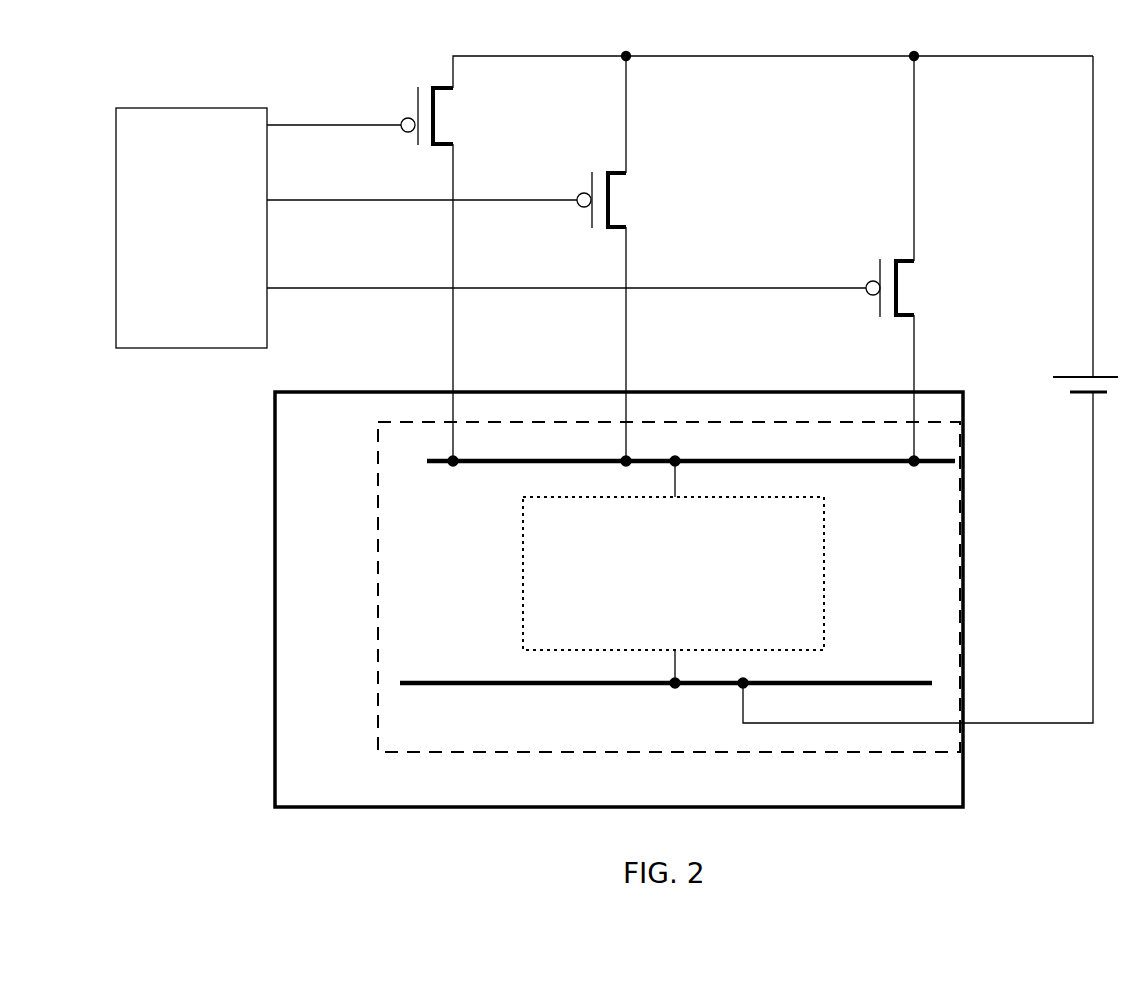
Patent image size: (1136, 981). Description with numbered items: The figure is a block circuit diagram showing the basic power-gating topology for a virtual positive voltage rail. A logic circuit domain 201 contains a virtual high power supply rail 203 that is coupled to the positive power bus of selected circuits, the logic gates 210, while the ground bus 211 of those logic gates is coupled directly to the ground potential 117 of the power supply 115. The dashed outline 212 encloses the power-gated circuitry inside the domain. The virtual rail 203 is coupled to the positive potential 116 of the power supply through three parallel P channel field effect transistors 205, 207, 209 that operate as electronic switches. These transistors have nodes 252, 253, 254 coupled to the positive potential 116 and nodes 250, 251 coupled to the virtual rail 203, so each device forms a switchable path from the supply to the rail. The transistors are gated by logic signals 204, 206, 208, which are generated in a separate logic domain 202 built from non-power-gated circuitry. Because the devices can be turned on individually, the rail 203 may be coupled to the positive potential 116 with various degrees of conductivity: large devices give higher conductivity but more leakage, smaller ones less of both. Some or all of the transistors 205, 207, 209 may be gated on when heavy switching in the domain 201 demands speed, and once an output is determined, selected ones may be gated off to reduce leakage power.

The logic circuit domain 201 is at (592, 802).
The logic domain 202 is at (202, 149).
The virtual high power supply rail 203 is at (500, 462).
The logic signal 204 is at (342, 127).
The P channel field effect transistor 205 is at (435, 114).
The logic signal 206 is at (397, 201).
The P channel field effect transistor 207 is at (611, 199).
The logic signal 208 is at (742, 288).
The P channel field effect transistor 209 is at (899, 284).
The logic gates 210 is at (826, 535).
The ground bus 211 is at (858, 683).
The circuit block 212 is at (378, 505).
The node 250 is at (455, 306).
The node 251 is at (628, 306).
The node 252 is at (543, 56).
The node 253 is at (628, 83).
The node 254 is at (917, 82).
The power supply 115 is at (1078, 377).
The positive potential 116 is at (1028, 56).
The ground potential 117 is at (1025, 723).